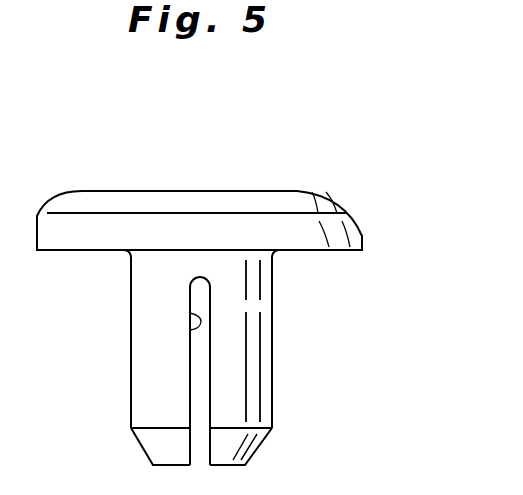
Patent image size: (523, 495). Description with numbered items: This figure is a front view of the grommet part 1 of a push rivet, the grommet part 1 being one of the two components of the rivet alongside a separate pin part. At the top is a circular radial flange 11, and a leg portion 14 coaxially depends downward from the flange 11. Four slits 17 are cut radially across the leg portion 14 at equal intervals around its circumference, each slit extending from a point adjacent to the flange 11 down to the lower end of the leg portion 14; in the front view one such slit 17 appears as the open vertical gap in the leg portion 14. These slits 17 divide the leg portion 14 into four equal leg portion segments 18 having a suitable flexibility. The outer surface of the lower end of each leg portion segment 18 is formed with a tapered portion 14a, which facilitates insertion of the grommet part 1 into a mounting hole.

The grommet part 1 is at (331, 170).
The circular radial flange 11 is at (362, 238).
The leg portion 14 is at (270, 384).
The tapered portion 14a is at (148, 447).
The slits 17 is at (192, 332).
The leg portion segments 18 is at (267, 326).